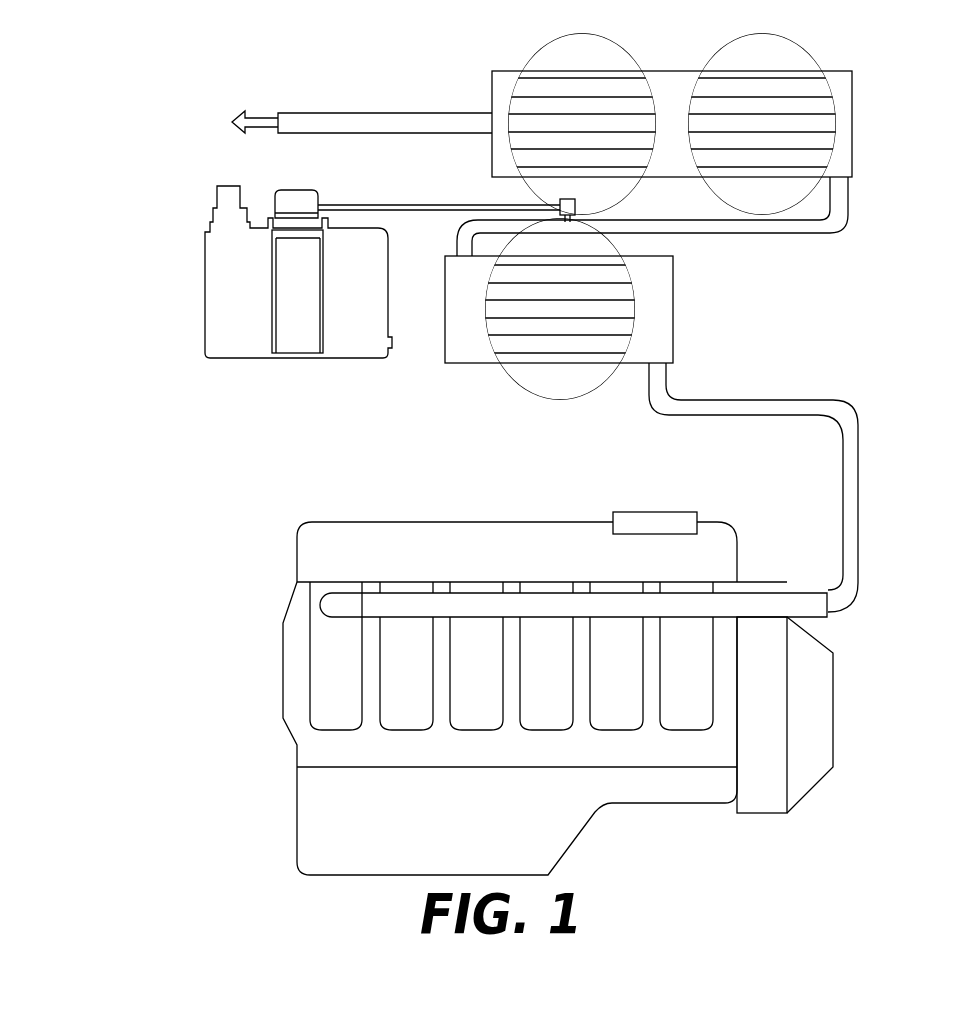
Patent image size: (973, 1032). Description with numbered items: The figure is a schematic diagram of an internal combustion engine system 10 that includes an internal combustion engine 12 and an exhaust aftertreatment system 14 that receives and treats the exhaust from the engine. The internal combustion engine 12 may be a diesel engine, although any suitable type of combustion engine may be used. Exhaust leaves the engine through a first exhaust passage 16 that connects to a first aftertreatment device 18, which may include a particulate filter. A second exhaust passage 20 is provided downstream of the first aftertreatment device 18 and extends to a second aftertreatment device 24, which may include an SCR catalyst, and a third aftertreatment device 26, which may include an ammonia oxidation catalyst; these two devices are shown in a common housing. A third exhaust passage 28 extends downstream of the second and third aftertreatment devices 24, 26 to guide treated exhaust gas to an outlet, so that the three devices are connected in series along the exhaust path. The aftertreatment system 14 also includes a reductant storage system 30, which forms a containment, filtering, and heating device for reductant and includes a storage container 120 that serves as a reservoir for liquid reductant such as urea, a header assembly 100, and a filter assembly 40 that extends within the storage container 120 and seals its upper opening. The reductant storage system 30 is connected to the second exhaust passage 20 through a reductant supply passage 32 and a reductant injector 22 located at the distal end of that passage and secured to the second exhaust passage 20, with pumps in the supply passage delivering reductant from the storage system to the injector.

The internal combustion engine system 10 is at (196, 58).
The internal combustion engine 12 is at (290, 690).
The exhaust aftertreatment system 14 is at (866, 240).
The first exhaust passage 16 is at (850, 462).
The first aftertreatment device 18 is at (612, 276).
The second exhaust passage 20 is at (765, 228).
The reductant injector 22 is at (575, 207).
The second aftertreatment device 24 is at (748, 103).
The third aftertreatment device 26 is at (553, 103).
The third exhaust passage 28 is at (295, 121).
The reductant storage system 30 is at (197, 202).
The reductant supply passage 32 is at (418, 206).
The filter assembly 40 is at (268, 313).
The header assembly 100 is at (290, 180).
The storage container 120 is at (212, 302).